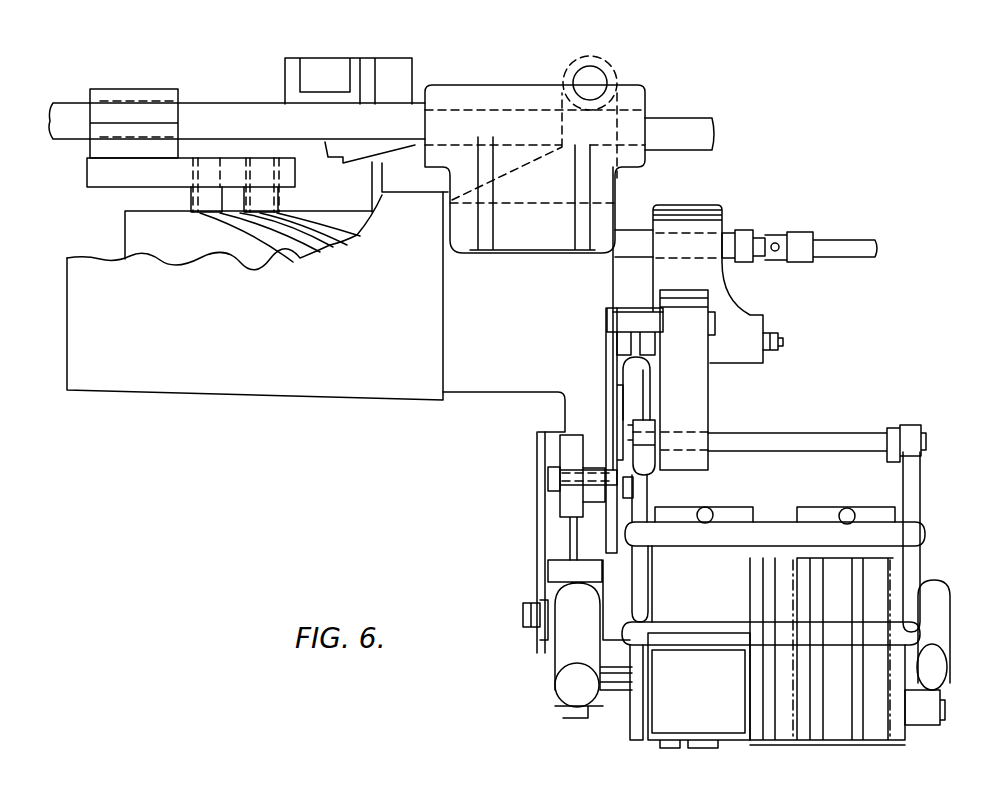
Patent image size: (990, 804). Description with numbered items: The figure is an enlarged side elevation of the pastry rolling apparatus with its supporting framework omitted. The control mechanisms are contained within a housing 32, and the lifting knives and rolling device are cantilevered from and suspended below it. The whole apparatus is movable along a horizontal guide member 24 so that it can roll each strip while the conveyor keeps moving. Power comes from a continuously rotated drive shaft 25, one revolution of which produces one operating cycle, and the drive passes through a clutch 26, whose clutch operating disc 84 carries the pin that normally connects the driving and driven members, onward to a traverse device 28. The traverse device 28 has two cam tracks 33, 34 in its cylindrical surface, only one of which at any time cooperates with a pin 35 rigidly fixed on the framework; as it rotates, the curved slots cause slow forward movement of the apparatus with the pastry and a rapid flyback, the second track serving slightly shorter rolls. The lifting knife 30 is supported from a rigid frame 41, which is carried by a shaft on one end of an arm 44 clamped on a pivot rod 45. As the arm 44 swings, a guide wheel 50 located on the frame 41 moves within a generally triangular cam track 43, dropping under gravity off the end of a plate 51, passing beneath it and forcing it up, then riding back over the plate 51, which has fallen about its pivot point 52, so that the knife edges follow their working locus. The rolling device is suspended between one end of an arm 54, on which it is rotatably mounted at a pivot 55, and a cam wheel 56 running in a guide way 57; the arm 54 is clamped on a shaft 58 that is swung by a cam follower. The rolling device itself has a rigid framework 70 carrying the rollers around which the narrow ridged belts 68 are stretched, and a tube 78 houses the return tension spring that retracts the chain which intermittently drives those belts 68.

The horizontal guide member 24 is at (695, 128).
The drive shaft 25 is at (846, 245).
The clutch 26 is at (300, 78).
The traverse device 28 is at (136, 244).
The lifting knife 30 is at (727, 513).
The housing 32 is at (398, 378).
The cam track 33 is at (280, 232).
The cam track 34 is at (322, 236).
The pin 35 is at (192, 197).
The rigid frame 41 is at (645, 463).
The cam track 43 is at (607, 400).
The arm 44 is at (700, 378).
The pivot rod 45 is at (620, 318).
The guide wheel 50 is at (647, 457).
The plate 51 is at (590, 488).
The pivot point 52 is at (548, 480).
The arm 54 is at (707, 278).
The pivot 55 is at (778, 341).
The cam wheel 56 is at (522, 606).
The guide way 57 is at (537, 547).
The shaft 58 is at (628, 243).
The rolling belts 68 is at (830, 607).
The rigid framework 70 is at (622, 371).
The tube 78 is at (565, 656).
The clutch operating disc 84 is at (378, 170).